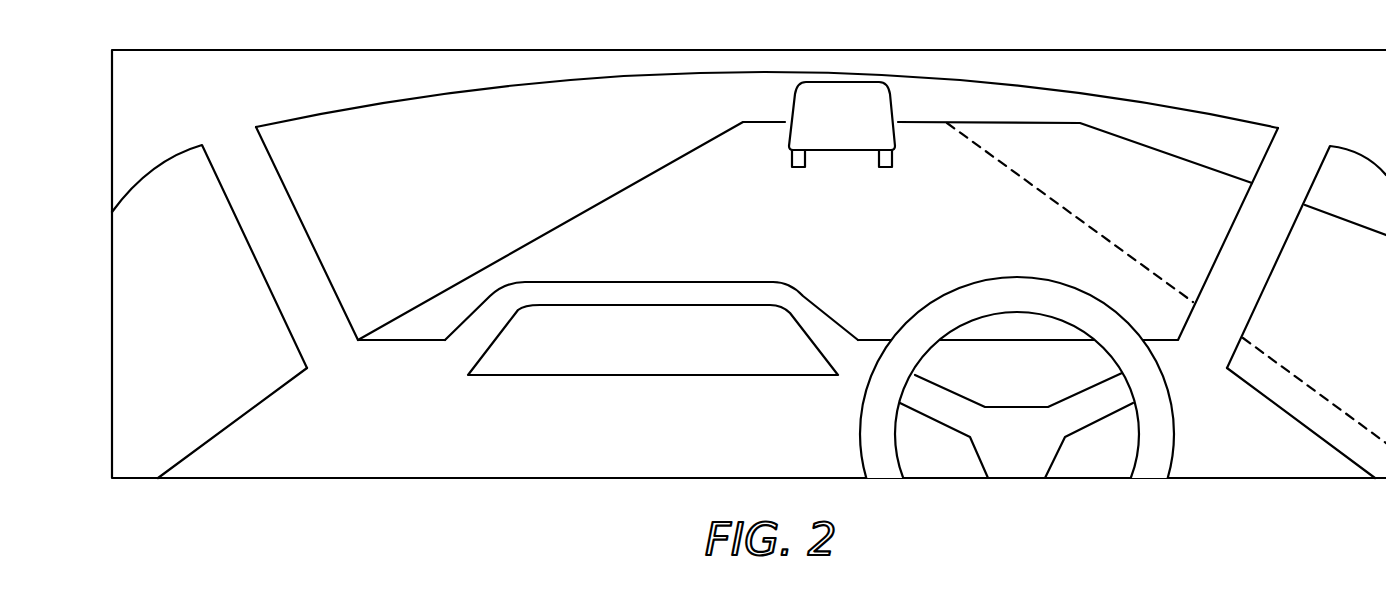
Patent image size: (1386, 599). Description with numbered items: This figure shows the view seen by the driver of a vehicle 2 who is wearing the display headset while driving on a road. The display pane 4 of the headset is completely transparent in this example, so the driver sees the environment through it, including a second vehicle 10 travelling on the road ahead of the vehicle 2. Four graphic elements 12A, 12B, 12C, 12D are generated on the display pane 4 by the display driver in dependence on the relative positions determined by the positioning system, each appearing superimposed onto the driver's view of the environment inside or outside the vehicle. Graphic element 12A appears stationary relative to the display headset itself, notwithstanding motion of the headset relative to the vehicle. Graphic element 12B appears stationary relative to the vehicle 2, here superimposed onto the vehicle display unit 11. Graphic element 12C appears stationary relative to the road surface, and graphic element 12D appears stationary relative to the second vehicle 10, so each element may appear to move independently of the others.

The vehicle 2 is at (290, 223).
The display pane 4 is at (957, 478).
The second vehicle 10 is at (842, 87).
The vehicle display unit 11 is at (748, 375).
The graphic element 12A is at (250, 140).
The graphic element 12B is at (676, 351).
The graphic element 12C is at (865, 228).
The graphic element 12D is at (865, 127).